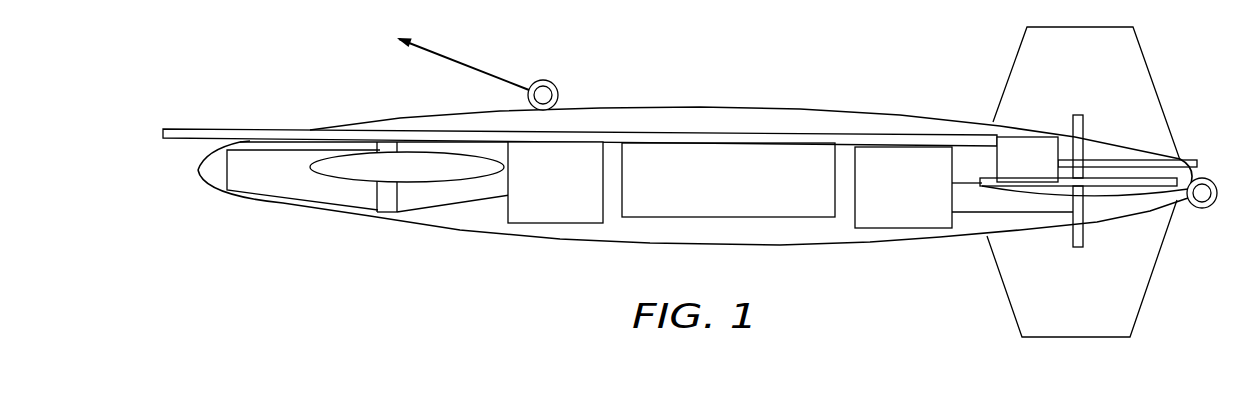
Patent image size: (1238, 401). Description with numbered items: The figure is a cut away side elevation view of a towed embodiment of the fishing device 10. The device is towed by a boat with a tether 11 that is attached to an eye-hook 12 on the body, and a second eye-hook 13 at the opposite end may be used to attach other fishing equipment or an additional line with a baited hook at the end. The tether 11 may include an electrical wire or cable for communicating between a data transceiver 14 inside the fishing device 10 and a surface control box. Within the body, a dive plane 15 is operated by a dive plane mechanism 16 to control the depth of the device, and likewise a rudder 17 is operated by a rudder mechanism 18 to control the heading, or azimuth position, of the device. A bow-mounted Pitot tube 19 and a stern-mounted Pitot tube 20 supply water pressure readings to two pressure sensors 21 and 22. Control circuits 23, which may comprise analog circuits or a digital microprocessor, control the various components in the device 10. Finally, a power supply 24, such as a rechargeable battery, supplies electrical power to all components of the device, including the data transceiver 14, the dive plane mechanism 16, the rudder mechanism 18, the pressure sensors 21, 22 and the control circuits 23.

The fishing device 10 is at (689, 92).
The tether 11 is at (455, 53).
The eye-hook 12 is at (544, 80).
The second eye-hook 13 is at (1200, 210).
The data transceiver 14 is at (288, 200).
The dive plane 15 is at (390, 185).
The dive plane mechanism 16 is at (560, 225).
The rudder 17 is at (1010, 307).
The rudder mechanism 18 is at (897, 230).
The bow-mounted Pitot tube 19 is at (222, 129).
The stern-mounted Pitot tube 20 is at (1187, 158).
The pressure sensor 21 is at (977, 127).
The pressure sensor 22 is at (1005, 135).
The control circuits 23 is at (1103, 190).
The power supply 24 is at (690, 217).